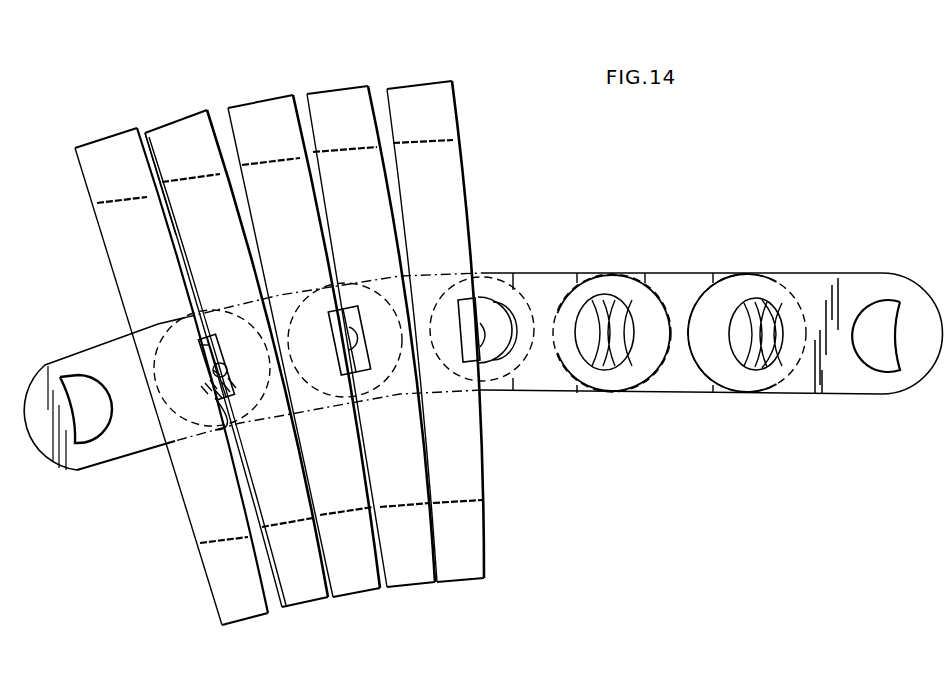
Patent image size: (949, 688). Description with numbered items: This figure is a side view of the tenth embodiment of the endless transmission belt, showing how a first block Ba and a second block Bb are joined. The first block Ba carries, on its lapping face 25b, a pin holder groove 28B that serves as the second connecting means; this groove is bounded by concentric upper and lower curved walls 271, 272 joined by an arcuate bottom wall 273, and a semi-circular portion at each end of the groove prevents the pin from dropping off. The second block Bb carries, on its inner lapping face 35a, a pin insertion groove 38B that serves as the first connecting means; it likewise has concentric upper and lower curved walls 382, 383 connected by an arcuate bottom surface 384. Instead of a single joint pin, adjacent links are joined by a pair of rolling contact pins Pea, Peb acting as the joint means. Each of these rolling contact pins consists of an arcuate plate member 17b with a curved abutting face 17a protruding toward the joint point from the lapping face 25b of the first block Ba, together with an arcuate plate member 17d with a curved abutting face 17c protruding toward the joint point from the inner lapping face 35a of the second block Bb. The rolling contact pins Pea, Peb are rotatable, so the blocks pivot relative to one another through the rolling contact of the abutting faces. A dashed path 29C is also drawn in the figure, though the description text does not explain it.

The first block Ba is at (90, 150).
The second block Bb is at (181, 122).
The pin holder groove 28B is at (184, 354).
The inner lapping face 35a is at (150, 148).
The lapping face 25b is at (158, 162).
The curved abutting face 17c is at (330, 312).
The rolling contact pin Pea is at (330, 292).
The rolling contact pin Peb is at (343, 310).
The arcuate plate member 17d is at (362, 337).
The curved abutting face 17a is at (360, 350).
The arcuate plate member 17b is at (215, 372).
The upper curved wall 271 is at (200, 390).
The arcuate bottom wall 273 is at (205, 383).
The lower curved wall 272 is at (213, 385).
The pin insertion groove 38B is at (210, 400).
The pawl path 29C is at (228, 400).
The lower curved wall 383 is at (226, 350).
The arcuate bottom surface 384 is at (238, 348).
The upper curved wall 382 is at (232, 380).